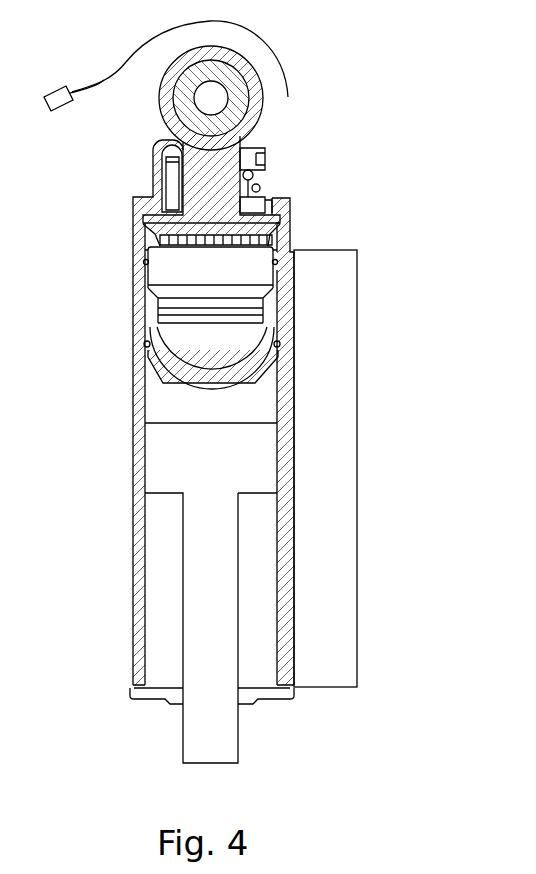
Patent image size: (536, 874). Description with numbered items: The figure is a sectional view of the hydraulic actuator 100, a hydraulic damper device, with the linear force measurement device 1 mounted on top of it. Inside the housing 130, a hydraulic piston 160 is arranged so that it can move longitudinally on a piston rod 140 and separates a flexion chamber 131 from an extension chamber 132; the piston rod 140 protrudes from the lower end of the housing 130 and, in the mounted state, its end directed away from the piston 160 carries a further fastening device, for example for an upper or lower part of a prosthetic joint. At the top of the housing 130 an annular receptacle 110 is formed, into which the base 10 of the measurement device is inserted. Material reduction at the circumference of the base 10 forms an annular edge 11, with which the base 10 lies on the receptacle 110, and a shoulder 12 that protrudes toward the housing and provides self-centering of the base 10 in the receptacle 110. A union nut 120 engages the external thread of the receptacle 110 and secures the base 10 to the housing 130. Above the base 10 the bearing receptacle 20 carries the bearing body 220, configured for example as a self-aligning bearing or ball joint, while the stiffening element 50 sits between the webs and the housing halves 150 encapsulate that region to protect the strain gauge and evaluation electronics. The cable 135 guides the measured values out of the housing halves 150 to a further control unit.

The linear force measurement device 1 is at (386, 118).
The base 10 is at (289, 218).
The annular edge 11 is at (140, 232).
The shoulder 12 is at (160, 268).
The bearing receptacle 20 is at (265, 97).
The stiffening element 50 is at (254, 174).
The hydraulic actuator 100 is at (362, 461).
The receptacle 110 is at (140, 241).
The union nut 120 is at (137, 206).
The housing 130 is at (138, 428).
The flexion chamber 131 is at (155, 397).
The extension chamber 132 is at (155, 562).
The cable 135 is at (110, 73).
The piston rod 140 is at (195, 608).
The housing halves 150 is at (266, 145).
The hydraulic piston 160 is at (160, 470).
The bearing body 220 is at (232, 65).